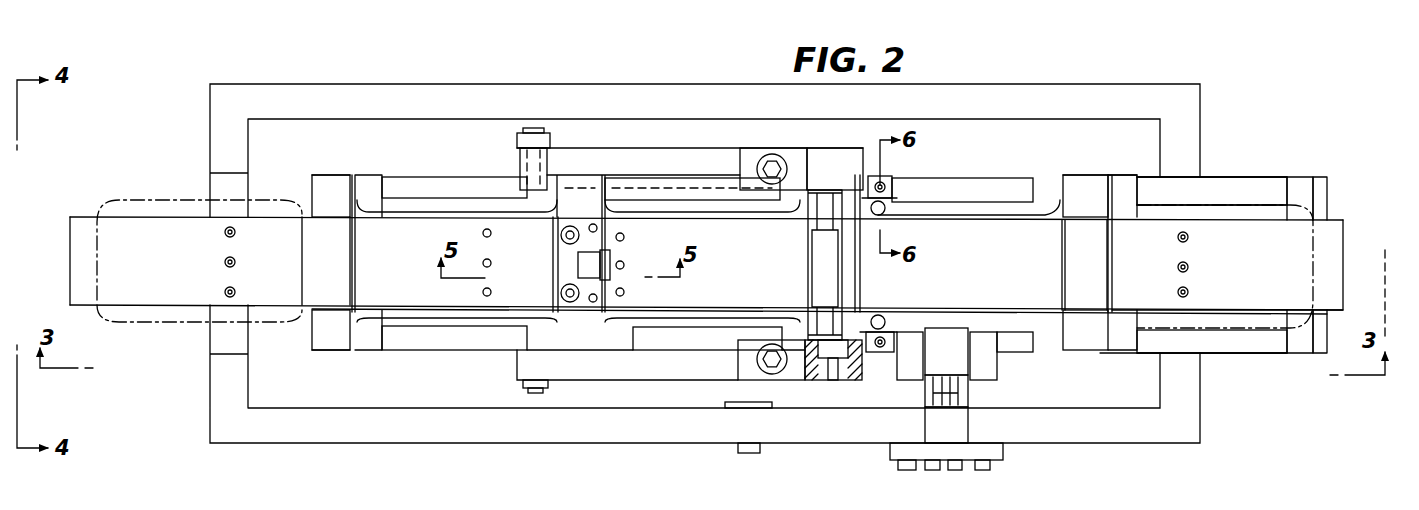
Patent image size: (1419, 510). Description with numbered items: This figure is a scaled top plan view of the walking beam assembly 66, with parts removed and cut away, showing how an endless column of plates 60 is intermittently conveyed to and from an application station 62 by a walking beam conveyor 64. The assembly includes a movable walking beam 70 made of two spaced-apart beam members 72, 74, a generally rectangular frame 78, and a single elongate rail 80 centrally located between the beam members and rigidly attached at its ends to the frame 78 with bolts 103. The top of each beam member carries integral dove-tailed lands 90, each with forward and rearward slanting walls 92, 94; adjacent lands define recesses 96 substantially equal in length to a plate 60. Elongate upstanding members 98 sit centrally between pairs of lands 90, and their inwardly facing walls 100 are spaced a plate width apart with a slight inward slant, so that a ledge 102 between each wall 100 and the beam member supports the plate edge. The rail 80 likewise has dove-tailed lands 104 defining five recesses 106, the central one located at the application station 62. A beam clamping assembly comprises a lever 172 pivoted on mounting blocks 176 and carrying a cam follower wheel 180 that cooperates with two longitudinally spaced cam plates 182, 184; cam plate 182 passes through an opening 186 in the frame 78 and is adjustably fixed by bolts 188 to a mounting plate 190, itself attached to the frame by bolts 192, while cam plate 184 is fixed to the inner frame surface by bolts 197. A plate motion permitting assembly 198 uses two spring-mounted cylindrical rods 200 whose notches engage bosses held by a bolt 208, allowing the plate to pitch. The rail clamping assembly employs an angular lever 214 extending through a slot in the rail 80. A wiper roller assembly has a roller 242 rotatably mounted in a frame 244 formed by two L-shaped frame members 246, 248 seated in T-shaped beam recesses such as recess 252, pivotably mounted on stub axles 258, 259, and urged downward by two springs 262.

The plates 60 is at (170, 185).
The application station 62 is at (638, 140).
The walking beam conveyor 64 is at (1242, 492).
The walking beam assembly 66 is at (1270, 445).
The walking beam 70 is at (1327, 355).
The beam member 72 is at (315, 350).
The beam member 74 is at (315, 175).
The frame 78 is at (1208, 128).
The rail 80 is at (68, 217).
The lands 90 is at (320, 208).
The forward slanting wall 92 is at (1060, 182).
The rearward slanting wall 94 is at (1112, 185).
The recesses 96 is at (365, 178).
The upstanding members 98 is at (445, 185).
The inwardly facing walls 100 is at (1243, 207).
The ledge 102 is at (1273, 320).
The bolts 103 is at (225, 290).
The lands 104 is at (313, 273).
The recesses 106 is at (995, 251).
The lever 172 is at (968, 362).
The mounting blocks 176 is at (908, 380).
The cam follower wheel 180 is at (950, 395).
The cam plate 182 is at (970, 431).
The cam plate 184 is at (728, 402).
The opening 186 is at (892, 455).
The bolts 188 is at (955, 470).
The mounting plate 190 is at (890, 452).
The bolts 192 is at (905, 470).
The bolts 197 is at (740, 455).
The plate motion permitting assembly 198 is at (868, 188).
The rods 200 is at (882, 214).
The bolt 208 is at (883, 183).
The lever 214 is at (628, 238).
The roller 242 is at (815, 250).
The frame 244 is at (508, 358).
The frame member 246 is at (628, 390).
The frame member 248 is at (617, 148).
The recess 252 is at (670, 185).
The stub axle 258 is at (535, 393).
The stub axle 259 is at (530, 133).
The springs 262 is at (772, 155).